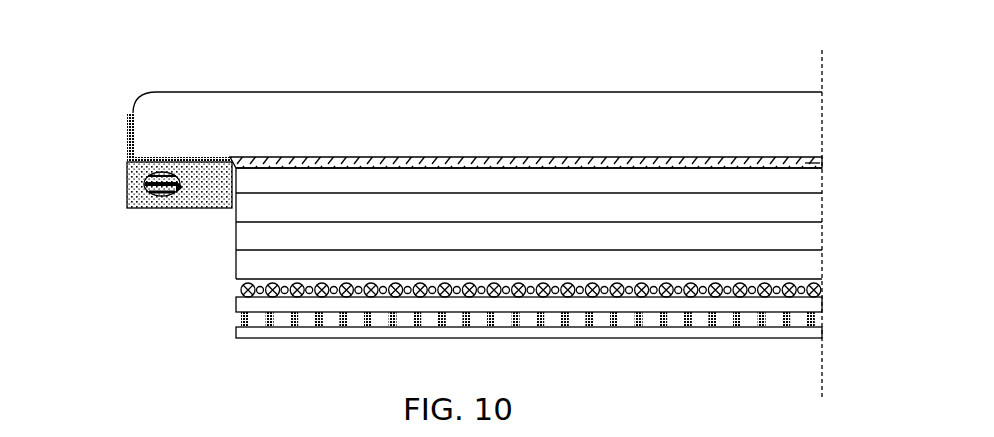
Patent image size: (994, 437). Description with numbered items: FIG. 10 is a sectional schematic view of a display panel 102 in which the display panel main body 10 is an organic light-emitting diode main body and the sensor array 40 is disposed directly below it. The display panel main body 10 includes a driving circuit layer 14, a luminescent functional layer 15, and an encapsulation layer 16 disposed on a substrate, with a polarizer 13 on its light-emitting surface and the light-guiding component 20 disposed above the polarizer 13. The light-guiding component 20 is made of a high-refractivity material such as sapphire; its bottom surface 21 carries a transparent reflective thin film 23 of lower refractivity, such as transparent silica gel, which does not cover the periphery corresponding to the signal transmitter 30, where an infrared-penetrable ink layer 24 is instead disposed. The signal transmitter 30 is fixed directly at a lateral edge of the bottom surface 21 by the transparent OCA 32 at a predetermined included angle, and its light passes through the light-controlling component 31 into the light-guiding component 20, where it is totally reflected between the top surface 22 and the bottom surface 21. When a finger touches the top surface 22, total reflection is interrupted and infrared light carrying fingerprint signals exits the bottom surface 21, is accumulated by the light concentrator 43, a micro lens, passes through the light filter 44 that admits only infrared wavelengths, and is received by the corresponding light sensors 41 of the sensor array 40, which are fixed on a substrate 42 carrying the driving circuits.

The display panel 102 is at (235, 69).
The display panel main body 10 is at (873, 195).
The polarizer 13 is at (797, 177).
The driving circuit layer 14 is at (760, 270).
The luminescent functional layer 15 is at (760, 239).
The encapsulation layer 16 is at (760, 206).
The light-guiding component 20 is at (773, 122).
The bottom surface 21 is at (327, 151).
The top surface 22 is at (509, 88).
The transparent reflective thin film 23 is at (823, 162).
The ink layer 24 is at (129, 112).
The signal transmitter 30 is at (128, 172).
The light-controlling component 31 is at (181, 188).
The transparent OCA 32 is at (208, 190).
The sensor array 40 is at (875, 317).
The light sensors 41 is at (812, 318).
The substrate 42 is at (782, 330).
The light concentrator 43 is at (810, 290).
The light filter 44 is at (245, 304).